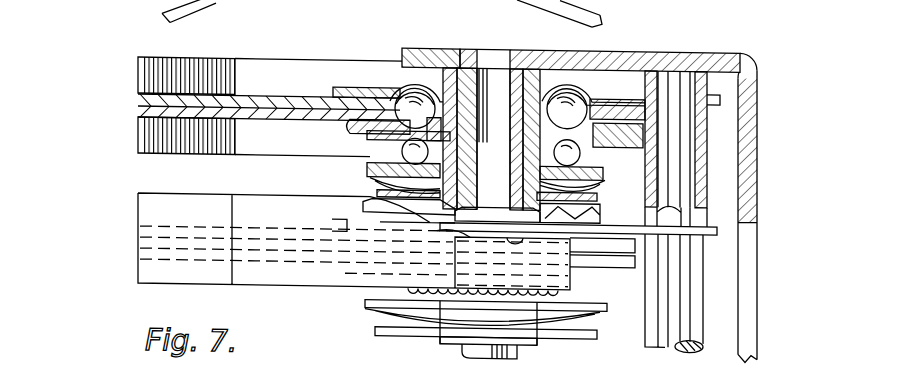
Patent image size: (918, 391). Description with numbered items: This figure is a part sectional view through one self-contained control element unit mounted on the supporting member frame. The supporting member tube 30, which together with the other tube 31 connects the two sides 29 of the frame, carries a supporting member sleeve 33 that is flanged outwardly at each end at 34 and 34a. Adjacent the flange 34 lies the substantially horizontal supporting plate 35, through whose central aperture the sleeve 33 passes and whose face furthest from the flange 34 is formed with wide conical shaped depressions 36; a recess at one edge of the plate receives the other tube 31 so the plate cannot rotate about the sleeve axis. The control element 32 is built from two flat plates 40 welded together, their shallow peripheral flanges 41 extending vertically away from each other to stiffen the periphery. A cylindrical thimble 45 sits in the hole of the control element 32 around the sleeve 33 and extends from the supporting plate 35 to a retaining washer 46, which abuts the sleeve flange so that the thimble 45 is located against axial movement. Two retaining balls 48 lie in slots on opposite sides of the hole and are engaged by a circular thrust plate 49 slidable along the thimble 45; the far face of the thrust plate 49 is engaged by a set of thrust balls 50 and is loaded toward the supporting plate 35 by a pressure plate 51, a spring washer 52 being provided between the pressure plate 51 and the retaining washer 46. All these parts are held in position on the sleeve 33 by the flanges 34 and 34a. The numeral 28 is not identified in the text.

The housing side wall 28 is at (738, 315).
The side 29 is at (612, 50).
The supporting member tube 30 is at (498, 50).
The other tube 31 is at (685, 63).
The control element 32 is at (153, 206).
The supporting member sleeve 33 is at (491, 105).
The flange 34 is at (441, 50).
The flange 34a is at (450, 201).
The supporting plate 35 is at (338, 84).
The conical shaped depression 36 is at (411, 45).
The flanged plate 40 is at (265, 98).
The flange 41 is at (222, 70).
The thimble 45 is at (530, 146).
The retaining washer 46 is at (600, 198).
The retaining ball 48 is at (407, 100).
The thrust plate 49 is at (363, 132).
The thrust ball 50 is at (402, 148).
The pressure plate 51 is at (380, 175).
The spring washer 52 is at (598, 176).